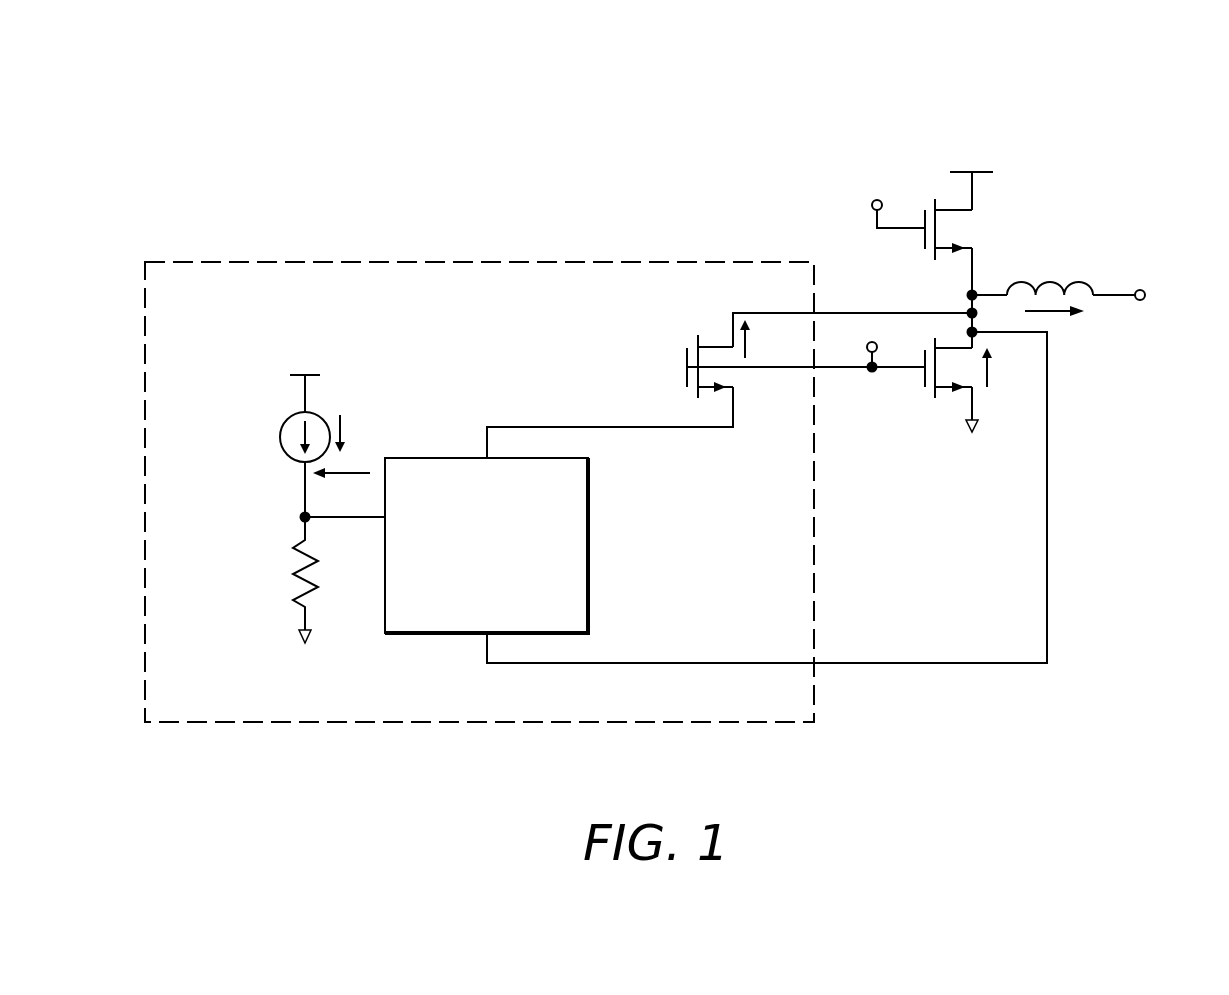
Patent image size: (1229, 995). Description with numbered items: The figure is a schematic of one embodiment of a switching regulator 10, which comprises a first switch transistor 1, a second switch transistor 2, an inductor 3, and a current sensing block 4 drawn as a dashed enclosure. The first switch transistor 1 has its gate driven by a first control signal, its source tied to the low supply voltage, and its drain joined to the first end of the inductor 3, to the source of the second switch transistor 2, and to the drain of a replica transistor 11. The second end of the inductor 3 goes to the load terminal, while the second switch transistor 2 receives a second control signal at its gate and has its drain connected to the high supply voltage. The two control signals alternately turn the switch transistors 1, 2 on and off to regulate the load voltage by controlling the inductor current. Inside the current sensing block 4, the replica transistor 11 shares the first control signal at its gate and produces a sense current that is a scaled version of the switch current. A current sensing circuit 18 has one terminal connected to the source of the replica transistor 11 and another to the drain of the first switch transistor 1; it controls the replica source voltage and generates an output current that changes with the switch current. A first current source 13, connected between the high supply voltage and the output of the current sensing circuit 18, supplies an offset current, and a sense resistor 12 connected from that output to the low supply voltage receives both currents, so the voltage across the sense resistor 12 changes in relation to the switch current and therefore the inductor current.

The switching regulator 10 is at (1110, 85).
The current sensing block 4 is at (190, 261).
The first current source 13 is at (292, 414).
The sense resistor 12 is at (307, 553).
The current sensing circuit 18 is at (447, 456).
The replica transistor 11 is at (688, 378).
The first switch transistor 1 is at (922, 378).
The second switch transistor 2 is at (923, 238).
The inductor 3 is at (1057, 285).